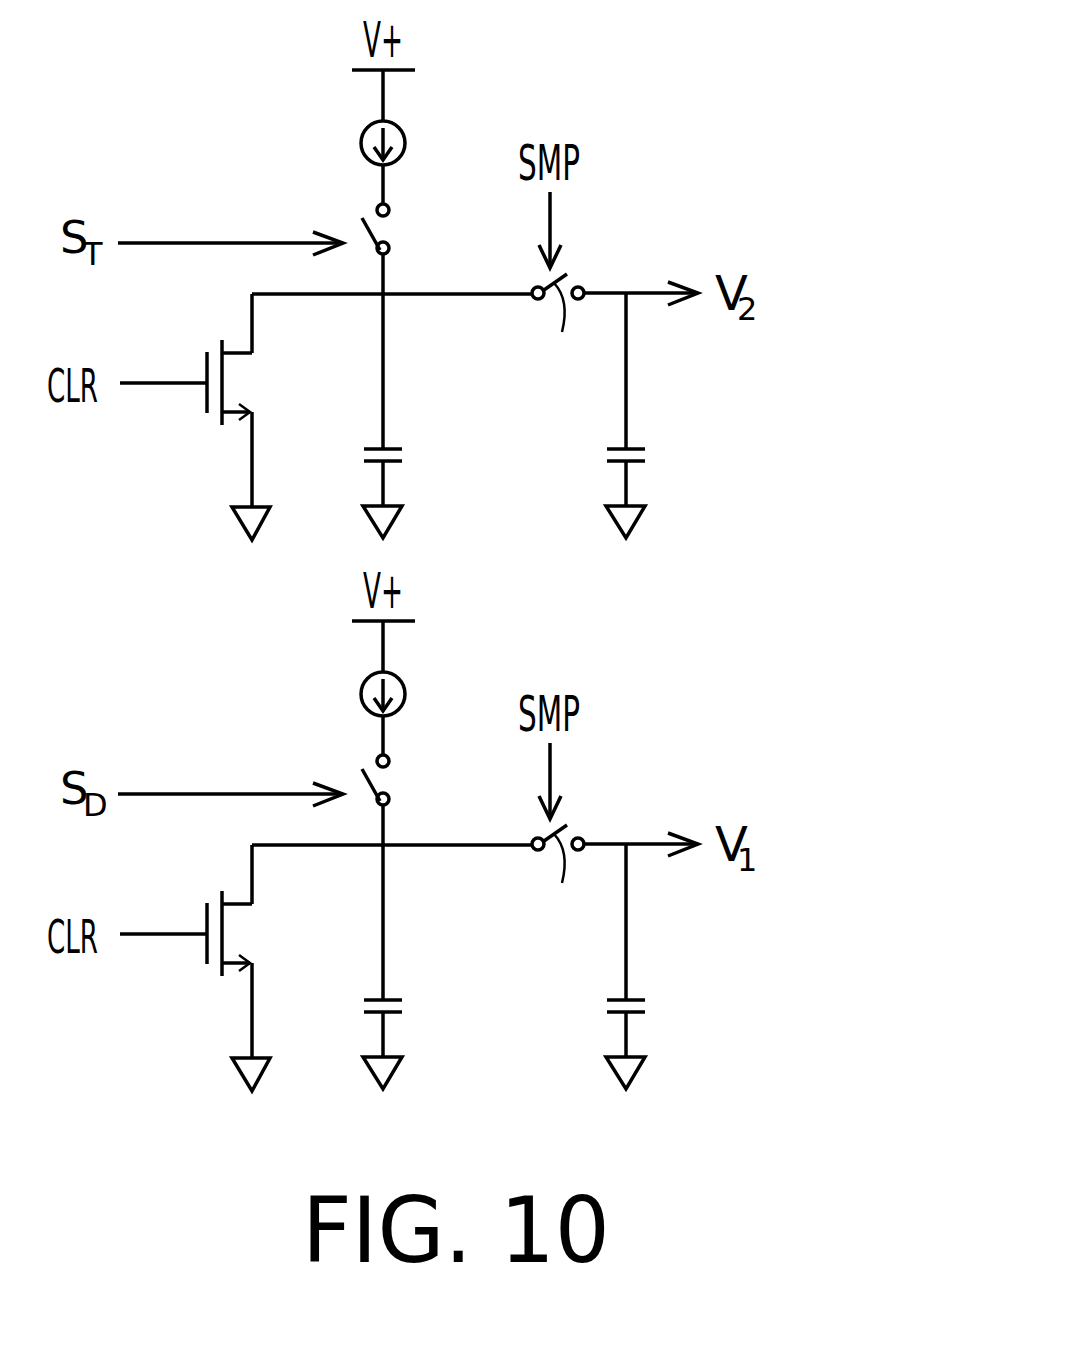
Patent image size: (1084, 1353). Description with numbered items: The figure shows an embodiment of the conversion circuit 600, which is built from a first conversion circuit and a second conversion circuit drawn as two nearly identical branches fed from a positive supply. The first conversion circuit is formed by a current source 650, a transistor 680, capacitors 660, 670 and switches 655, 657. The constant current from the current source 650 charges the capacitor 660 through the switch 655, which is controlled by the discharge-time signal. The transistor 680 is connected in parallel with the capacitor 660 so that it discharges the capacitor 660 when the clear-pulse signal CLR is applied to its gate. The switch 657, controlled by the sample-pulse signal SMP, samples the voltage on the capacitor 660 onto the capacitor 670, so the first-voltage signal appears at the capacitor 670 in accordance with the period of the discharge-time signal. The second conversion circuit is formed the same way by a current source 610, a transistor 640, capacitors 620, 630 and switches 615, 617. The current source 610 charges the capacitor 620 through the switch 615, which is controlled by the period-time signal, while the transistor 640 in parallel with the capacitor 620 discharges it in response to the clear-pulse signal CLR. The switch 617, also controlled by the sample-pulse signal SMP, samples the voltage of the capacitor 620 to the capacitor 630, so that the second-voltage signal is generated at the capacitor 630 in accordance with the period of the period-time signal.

The conversion circuit 600 is at (957, 1093).
The current source 610 is at (362, 153).
The switch 615 is at (372, 228).
The switch 617 is at (560, 331).
The capacitor 620 is at (393, 443).
The capacitor 630 is at (635, 443).
The transistor 640 is at (225, 377).
The current source 650 is at (341, 694).
The switch 655 is at (426, 779).
The switch 657 is at (560, 882).
The capacitor 660 is at (434, 1028).
The capacitor 670 is at (677, 1028).
The transistor 680 is at (273, 991).